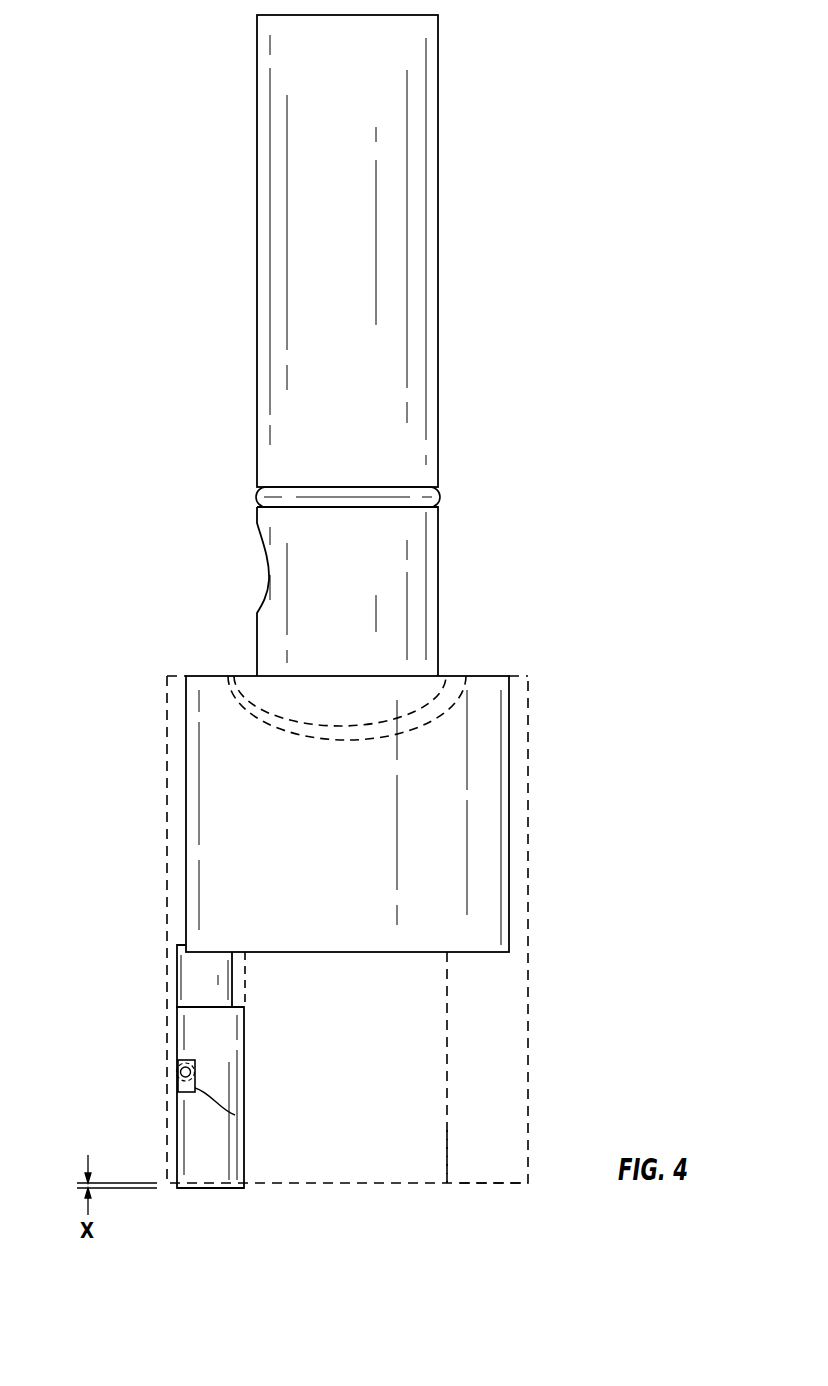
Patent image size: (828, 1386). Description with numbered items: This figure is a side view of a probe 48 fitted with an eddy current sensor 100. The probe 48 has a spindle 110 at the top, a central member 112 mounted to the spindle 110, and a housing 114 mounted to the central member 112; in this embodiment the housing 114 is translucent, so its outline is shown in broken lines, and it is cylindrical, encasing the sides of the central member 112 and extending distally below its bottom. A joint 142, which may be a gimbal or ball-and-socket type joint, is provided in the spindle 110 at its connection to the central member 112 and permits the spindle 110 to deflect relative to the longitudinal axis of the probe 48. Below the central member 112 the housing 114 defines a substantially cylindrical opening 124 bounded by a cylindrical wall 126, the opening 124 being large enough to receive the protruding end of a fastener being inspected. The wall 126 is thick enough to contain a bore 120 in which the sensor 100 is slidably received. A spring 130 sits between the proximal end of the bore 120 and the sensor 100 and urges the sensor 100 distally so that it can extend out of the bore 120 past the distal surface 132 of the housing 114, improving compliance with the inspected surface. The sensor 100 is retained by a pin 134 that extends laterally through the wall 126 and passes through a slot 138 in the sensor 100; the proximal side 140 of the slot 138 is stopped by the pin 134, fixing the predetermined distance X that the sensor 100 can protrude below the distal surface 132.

The probe 48 is at (528, 95).
The eddy current sensor 100 is at (222, 1172).
The spindle 110 is at (417, 296).
The central member 112 is at (440, 862).
The housing 114 is at (485, 983).
The bore 120 is at (242, 1082).
The opening 124 is at (447, 1133).
The cylindrical wall 126 is at (494, 1078).
The spring 130 is at (192, 982).
The distal surface 132 is at (483, 1184).
The pin 134 is at (182, 1072).
The slot 138 is at (235, 1115).
The proximal side 140 is at (189, 1060).
The joint 142 is at (262, 700).